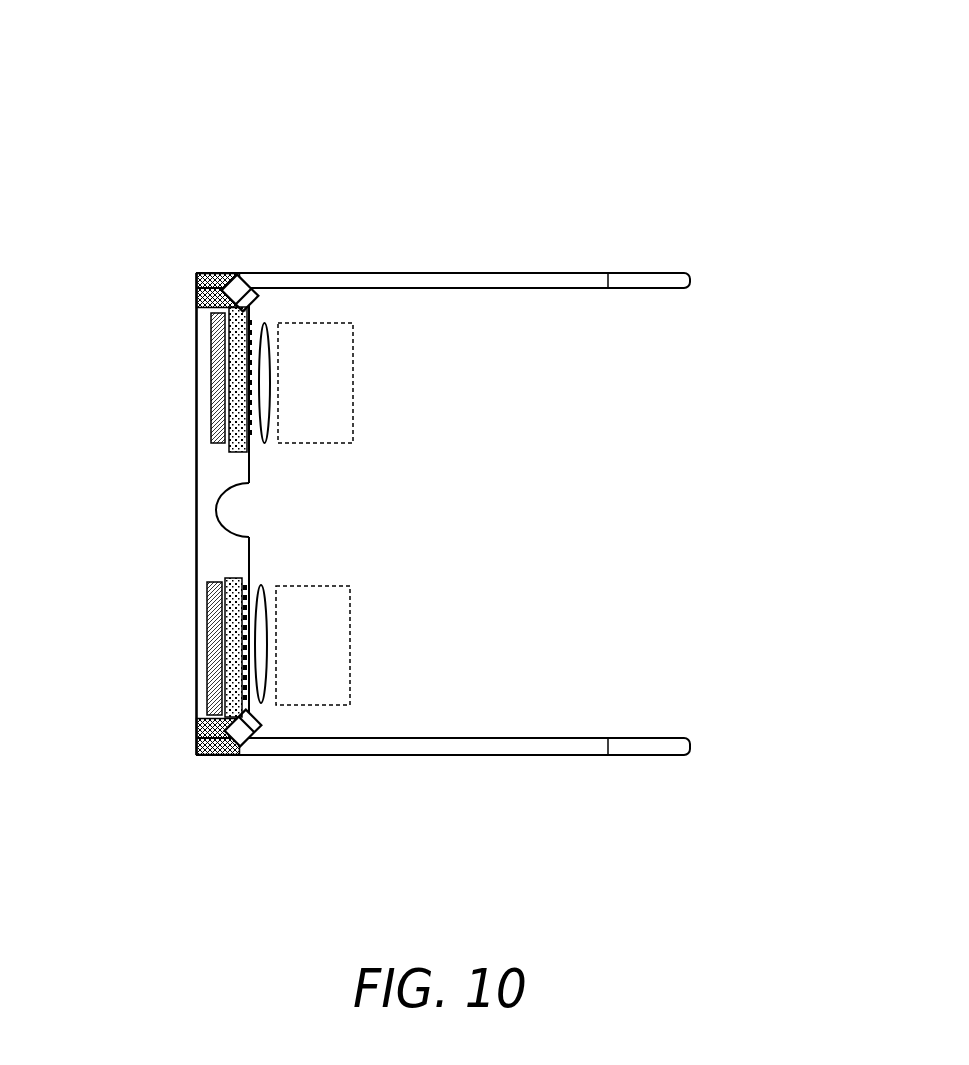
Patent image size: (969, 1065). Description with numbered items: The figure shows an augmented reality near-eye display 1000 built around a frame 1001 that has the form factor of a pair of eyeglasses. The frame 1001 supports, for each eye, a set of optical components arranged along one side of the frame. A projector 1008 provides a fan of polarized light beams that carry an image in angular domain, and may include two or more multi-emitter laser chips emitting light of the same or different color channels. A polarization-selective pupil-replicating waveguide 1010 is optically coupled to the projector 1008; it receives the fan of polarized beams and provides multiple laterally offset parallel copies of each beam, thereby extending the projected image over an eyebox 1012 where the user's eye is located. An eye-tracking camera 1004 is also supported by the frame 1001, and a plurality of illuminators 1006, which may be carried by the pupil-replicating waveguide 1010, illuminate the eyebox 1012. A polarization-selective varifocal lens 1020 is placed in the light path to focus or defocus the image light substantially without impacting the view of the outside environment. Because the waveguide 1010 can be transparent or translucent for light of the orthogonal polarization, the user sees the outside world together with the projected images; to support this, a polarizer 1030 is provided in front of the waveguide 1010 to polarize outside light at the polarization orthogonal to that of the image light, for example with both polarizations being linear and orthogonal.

The augmented reality near-eye display 1000 is at (430, 118).
The frame 1001 is at (573, 273).
The eye-tracking camera 1004 is at (242, 278).
The illuminators 1006 is at (247, 385).
The projector 1008 is at (196, 286).
The polarization-selective pupil-replicating waveguide 1010 is at (247, 418).
The eyebox 1012 is at (290, 394).
The polarization-selective varifocal lens 1020 is at (265, 322).
The polarizer 1030 is at (217, 338).